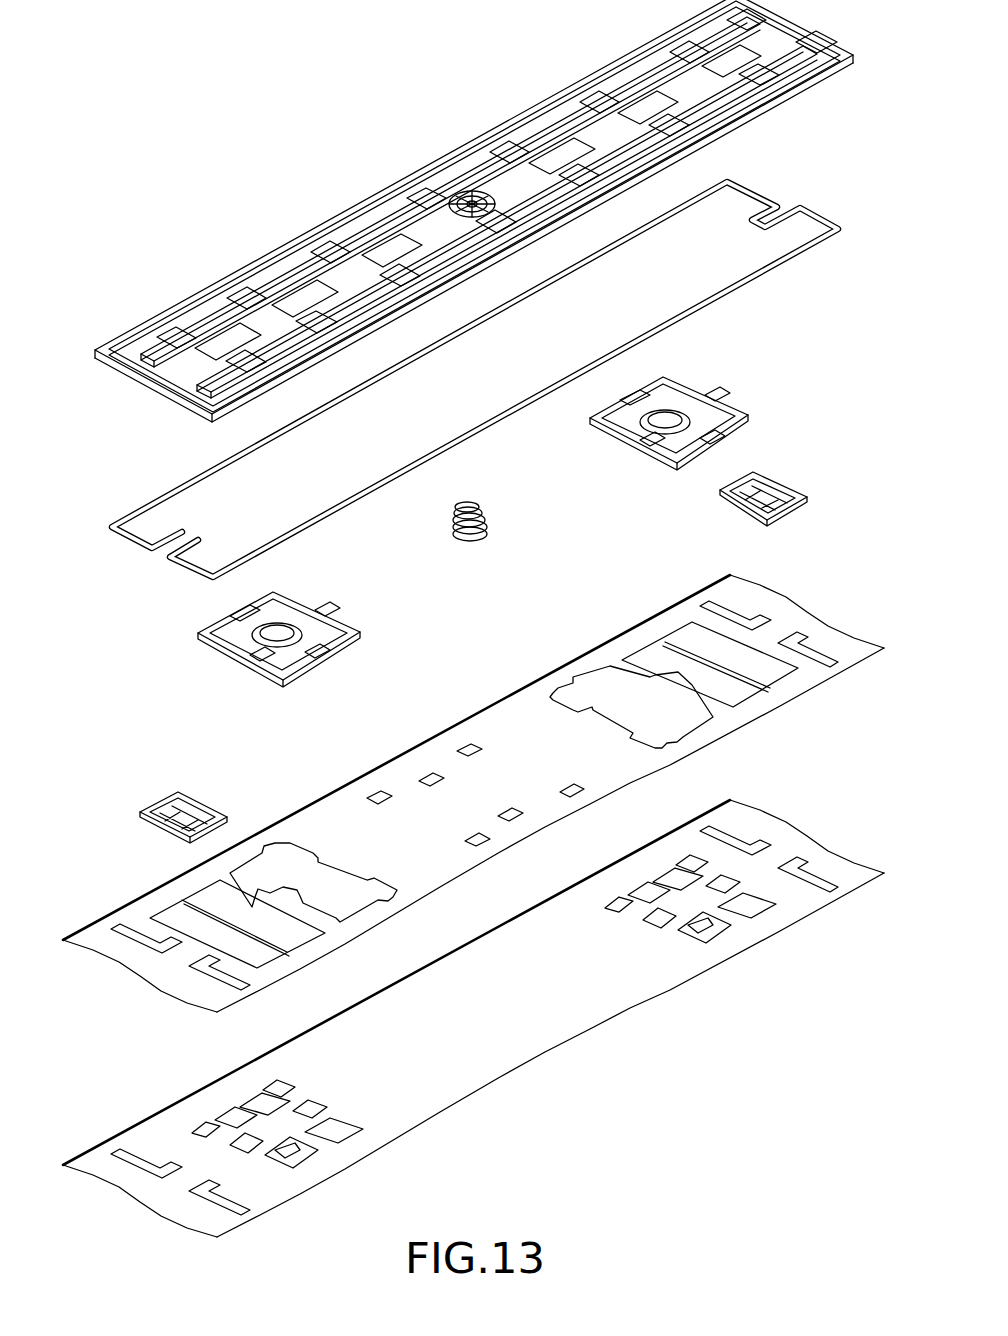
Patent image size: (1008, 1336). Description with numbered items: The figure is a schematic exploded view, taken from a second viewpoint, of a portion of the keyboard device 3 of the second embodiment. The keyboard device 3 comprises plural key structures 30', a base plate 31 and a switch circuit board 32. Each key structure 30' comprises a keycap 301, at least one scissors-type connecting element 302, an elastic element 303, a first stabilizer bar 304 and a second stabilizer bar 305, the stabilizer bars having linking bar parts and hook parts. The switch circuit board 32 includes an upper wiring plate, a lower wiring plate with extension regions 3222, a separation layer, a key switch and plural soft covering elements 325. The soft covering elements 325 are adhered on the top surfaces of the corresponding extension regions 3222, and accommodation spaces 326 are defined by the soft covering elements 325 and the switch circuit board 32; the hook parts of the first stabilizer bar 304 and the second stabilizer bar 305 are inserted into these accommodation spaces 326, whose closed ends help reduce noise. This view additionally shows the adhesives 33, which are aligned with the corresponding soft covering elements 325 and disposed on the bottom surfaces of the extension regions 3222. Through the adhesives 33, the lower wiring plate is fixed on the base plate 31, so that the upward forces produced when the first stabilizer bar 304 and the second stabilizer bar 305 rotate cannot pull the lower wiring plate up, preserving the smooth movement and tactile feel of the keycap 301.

The keyboard device 3 is at (254, 67).
The key structure 30' is at (474, 211).
The keycap 301 is at (513, 110).
The scissors-type connecting element 302 is at (724, 384).
The elastic element 303 is at (473, 508).
The first stabilizer bar 304 is at (475, 379).
The second stabilizer bar 305 is at (396, 473).
The soft covering element 325 is at (484, 644).
The accommodation space 326 is at (770, 488).
The switch circuit board 32 is at (473, 794).
The extension region 3222 is at (278, 965).
The adhesive 33 is at (205, 935).
The base plate 31 is at (550, 1041).